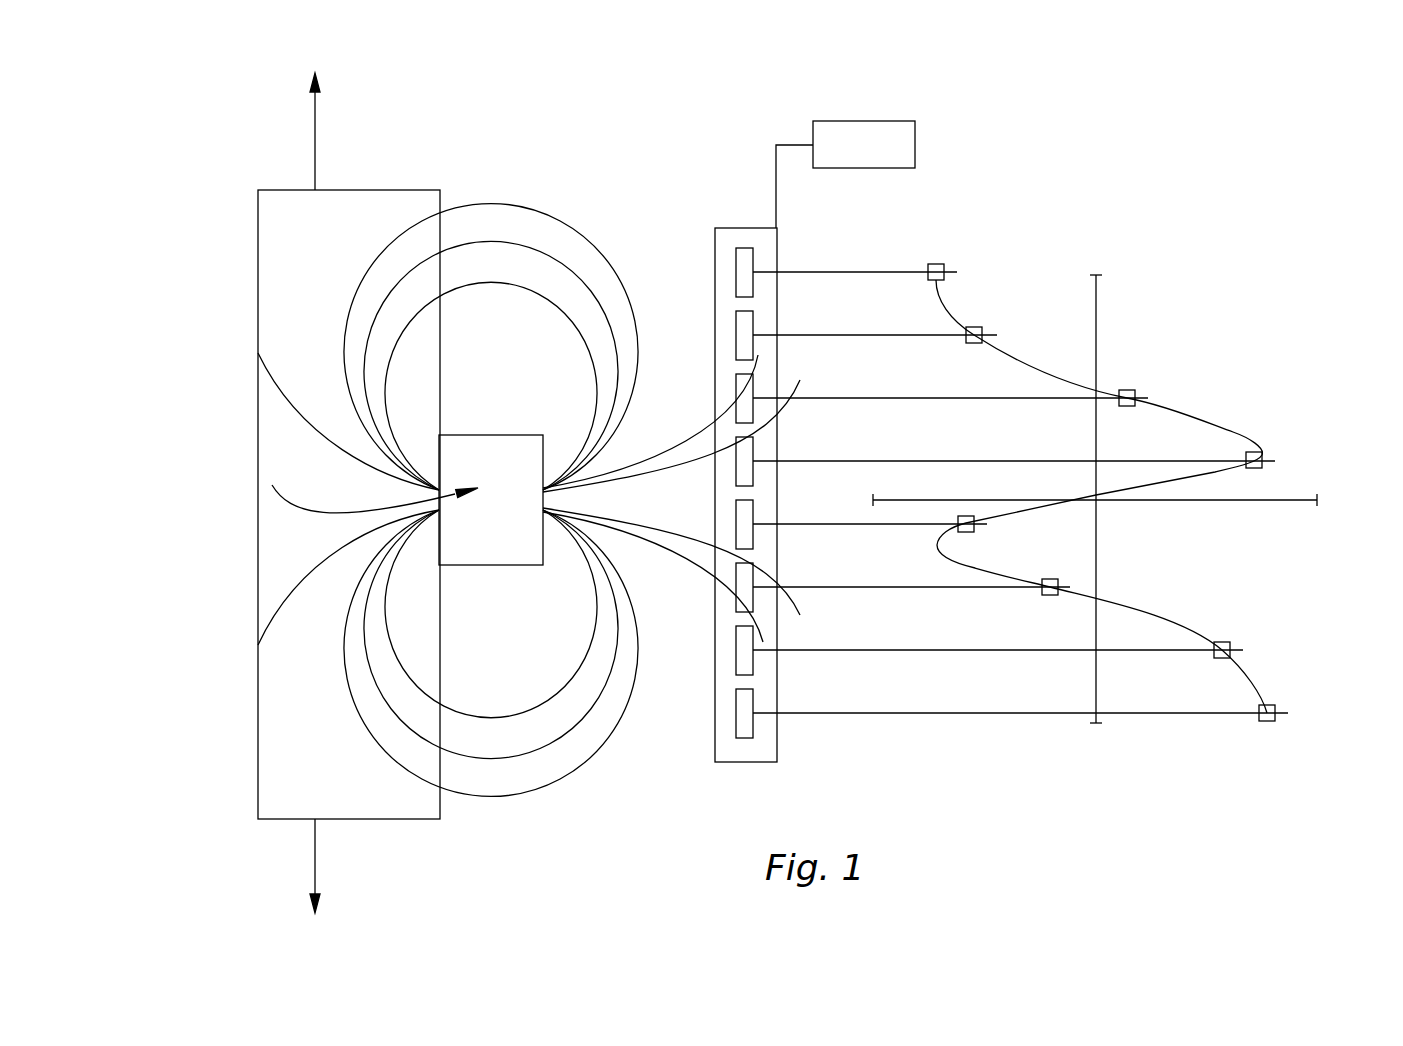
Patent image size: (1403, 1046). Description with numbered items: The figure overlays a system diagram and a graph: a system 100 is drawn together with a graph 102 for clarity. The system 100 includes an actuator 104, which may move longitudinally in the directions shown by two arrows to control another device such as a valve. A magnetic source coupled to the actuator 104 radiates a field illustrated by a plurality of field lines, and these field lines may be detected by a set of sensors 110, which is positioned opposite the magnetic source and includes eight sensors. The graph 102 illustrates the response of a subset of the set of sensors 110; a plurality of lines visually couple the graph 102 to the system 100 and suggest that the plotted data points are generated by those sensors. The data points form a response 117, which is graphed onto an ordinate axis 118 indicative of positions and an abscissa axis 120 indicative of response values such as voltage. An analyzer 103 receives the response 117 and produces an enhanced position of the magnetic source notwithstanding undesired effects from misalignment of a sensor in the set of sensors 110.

The system 100 is at (622, 86).
The graph 102 is at (1245, 96).
The analyzer 103 is at (862, 121).
The actuator 104 is at (383, 190).
The set of sensors 110 is at (743, 206).
The response 117 is at (1243, 410).
The ordinate axis 118 is at (1097, 312).
The abscissa axis 120 is at (1294, 522).